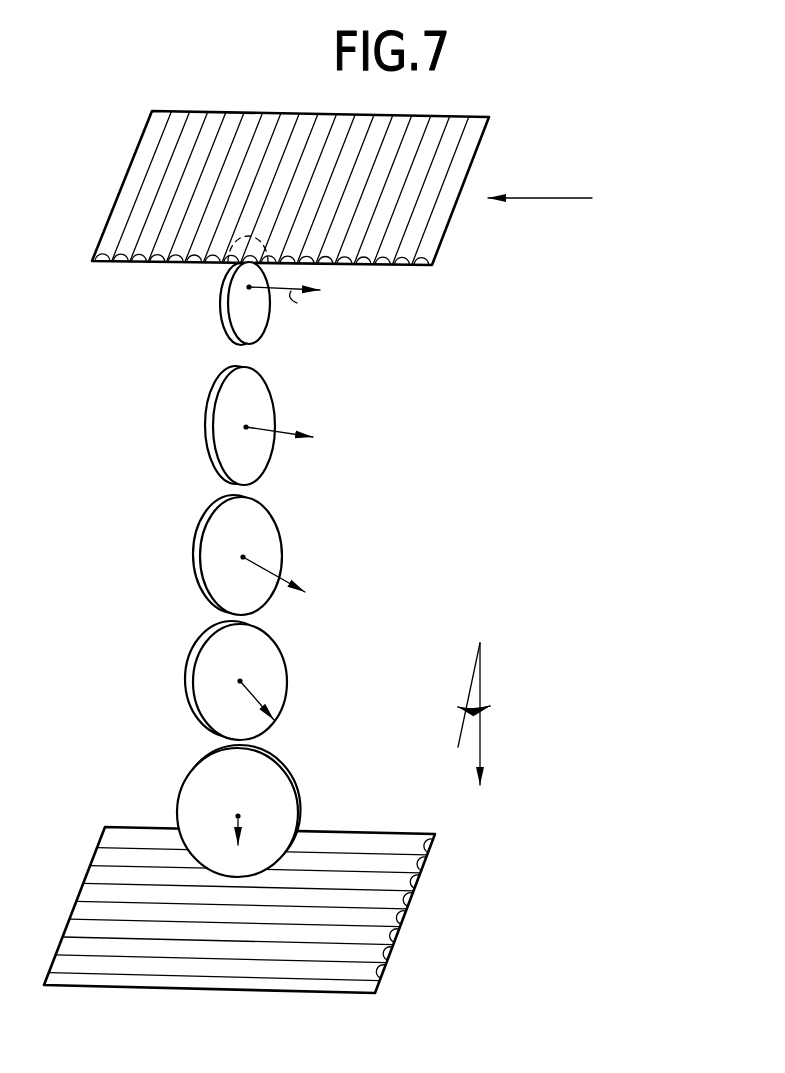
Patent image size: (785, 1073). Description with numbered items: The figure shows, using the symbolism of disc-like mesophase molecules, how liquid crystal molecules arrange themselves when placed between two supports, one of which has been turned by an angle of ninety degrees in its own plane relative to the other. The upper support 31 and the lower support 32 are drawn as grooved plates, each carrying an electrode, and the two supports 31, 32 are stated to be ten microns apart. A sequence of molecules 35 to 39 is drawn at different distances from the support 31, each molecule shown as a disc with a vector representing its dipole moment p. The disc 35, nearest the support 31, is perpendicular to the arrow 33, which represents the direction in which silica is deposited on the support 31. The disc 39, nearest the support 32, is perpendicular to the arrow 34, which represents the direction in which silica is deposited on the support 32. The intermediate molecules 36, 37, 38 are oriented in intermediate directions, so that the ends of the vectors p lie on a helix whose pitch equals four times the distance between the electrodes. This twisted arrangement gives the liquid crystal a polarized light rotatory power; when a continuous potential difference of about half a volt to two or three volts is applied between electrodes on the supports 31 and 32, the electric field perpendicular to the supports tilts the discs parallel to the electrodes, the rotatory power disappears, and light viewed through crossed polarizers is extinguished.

The support 31 is at (441, 238).
The support 32 is at (392, 947).
The arrow 33 is at (538, 198).
The arrow 34 is at (482, 748).
The disc 35 is at (232, 332).
The intermediate molecule 36 is at (223, 452).
The intermediate molecule 37 is at (216, 598).
The intermediate molecule 38 is at (207, 706).
The disc 39 is at (188, 800).